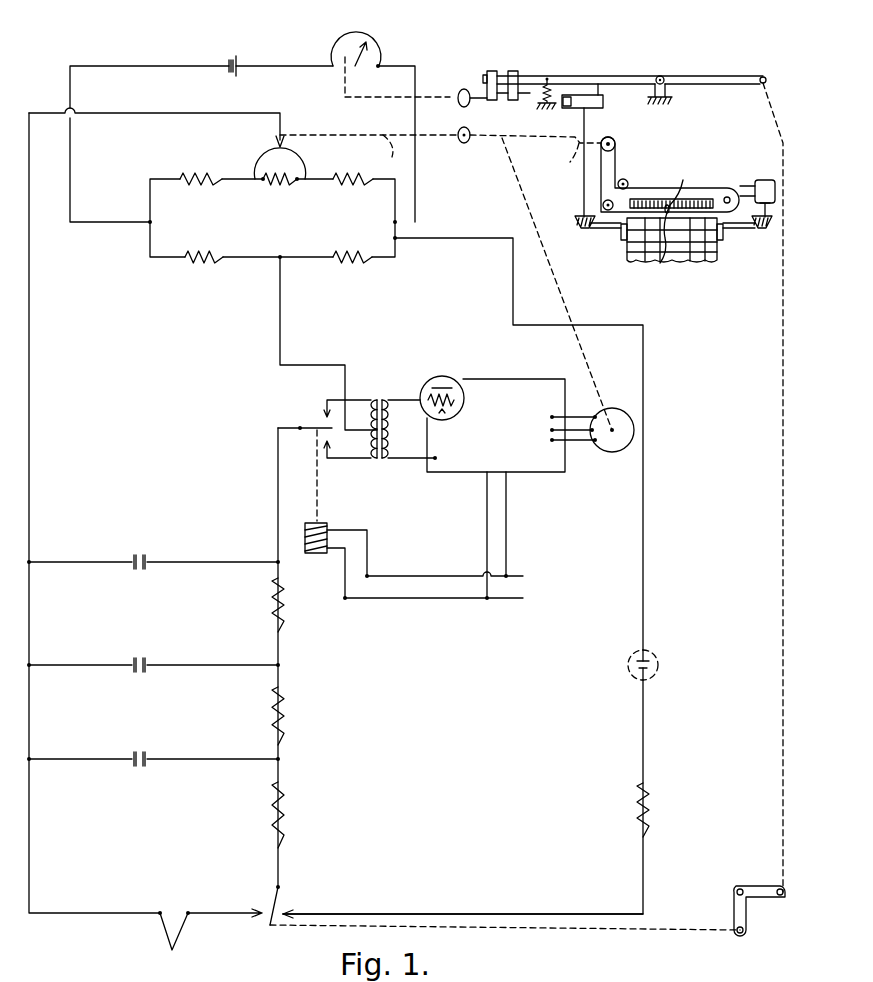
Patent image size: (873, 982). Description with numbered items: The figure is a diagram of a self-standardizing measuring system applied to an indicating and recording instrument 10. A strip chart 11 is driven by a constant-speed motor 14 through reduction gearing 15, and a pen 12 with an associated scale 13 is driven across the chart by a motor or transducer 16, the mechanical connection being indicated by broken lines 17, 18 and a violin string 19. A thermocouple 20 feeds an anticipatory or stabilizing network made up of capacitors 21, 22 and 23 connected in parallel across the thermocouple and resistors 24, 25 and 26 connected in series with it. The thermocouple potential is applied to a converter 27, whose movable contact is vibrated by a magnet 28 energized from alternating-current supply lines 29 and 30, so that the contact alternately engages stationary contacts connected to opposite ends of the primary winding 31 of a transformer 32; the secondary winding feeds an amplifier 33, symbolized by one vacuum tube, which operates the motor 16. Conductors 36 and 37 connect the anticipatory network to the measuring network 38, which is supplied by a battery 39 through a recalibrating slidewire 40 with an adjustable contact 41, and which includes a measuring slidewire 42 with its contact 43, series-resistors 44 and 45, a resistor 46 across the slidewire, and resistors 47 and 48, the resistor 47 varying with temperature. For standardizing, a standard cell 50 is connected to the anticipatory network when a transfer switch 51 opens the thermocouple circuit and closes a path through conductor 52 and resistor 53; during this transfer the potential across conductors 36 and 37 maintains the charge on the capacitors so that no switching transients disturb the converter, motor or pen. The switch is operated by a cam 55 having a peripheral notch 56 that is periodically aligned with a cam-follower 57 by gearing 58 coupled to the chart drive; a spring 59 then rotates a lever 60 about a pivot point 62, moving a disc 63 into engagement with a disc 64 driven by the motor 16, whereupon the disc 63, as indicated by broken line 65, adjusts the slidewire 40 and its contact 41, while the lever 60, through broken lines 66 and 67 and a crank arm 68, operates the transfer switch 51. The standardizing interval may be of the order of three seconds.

The indicating and recording instrument 10 is at (672, 259).
The strip chart 11 is at (630, 258).
The pen 12 is at (680, 205).
The scale 13 is at (655, 188).
The constant-speed motor 14 is at (758, 180).
The reduction gearing 15 is at (762, 230).
The motor or transducer 16 is at (613, 452).
The mechanical connection 17 is at (530, 216).
The mechanical connection 18 is at (475, 162).
The violin string 19 is at (618, 162).
The thermocouple 20 is at (160, 940).
The capacitor 21 is at (152, 546).
The capacitor 22 is at (150, 650).
The capacitor 23 is at (148, 743).
The resistor 24 is at (273, 600).
The resistor 25 is at (284, 712).
The resistor 26 is at (284, 814).
The converter 27 is at (308, 419).
The magnet 28 is at (316, 553).
The alternating-current supply line 29 is at (512, 575).
The alternating-current supply line 30 is at (512, 601).
The primary winding 31 is at (372, 460).
The transformer 32 is at (388, 400).
The amplifier 33 is at (523, 414).
The conductor 36 is at (35, 408).
The conductor 37 is at (278, 316).
The measuring network 38 is at (262, 229).
The battery 39 is at (231, 60).
The recalibrating slidewire 40 is at (333, 46).
The adjustable contact 41 is at (375, 52).
The measuring slidewire 42 is at (304, 167).
The contact 43 is at (272, 132).
The series-resistor 44 is at (203, 186).
The series-resistor 45 is at (352, 186).
The resistor 46 is at (290, 185).
The resistor 47 is at (206, 250).
The resistor 48 is at (364, 251).
The standard cell 50 is at (658, 668).
The transfer switch 51 is at (280, 900).
The conductor 52 is at (388, 912).
The resistor 53 is at (651, 808).
The cam 55 is at (600, 109).
The peripheral notch 56 is at (568, 108).
The cam-follower 57 is at (598, 92).
The gearing 58 is at (586, 229).
The spring 59 is at (540, 105).
The lever 60 is at (563, 75).
The pivot point 62 is at (664, 76).
The disc 63 is at (470, 92).
The disc 64 is at (465, 144).
The broken line 65 is at (437, 95).
The broken line 66 is at (783, 446).
The broken line 67 is at (688, 928).
The crank arm 68 is at (746, 924).